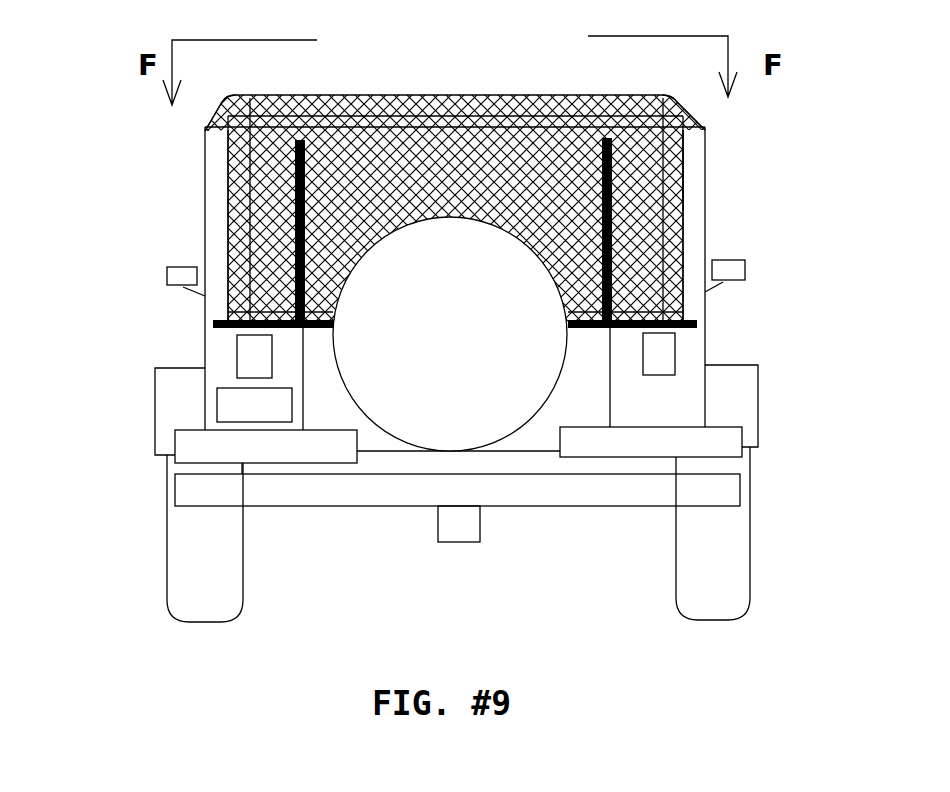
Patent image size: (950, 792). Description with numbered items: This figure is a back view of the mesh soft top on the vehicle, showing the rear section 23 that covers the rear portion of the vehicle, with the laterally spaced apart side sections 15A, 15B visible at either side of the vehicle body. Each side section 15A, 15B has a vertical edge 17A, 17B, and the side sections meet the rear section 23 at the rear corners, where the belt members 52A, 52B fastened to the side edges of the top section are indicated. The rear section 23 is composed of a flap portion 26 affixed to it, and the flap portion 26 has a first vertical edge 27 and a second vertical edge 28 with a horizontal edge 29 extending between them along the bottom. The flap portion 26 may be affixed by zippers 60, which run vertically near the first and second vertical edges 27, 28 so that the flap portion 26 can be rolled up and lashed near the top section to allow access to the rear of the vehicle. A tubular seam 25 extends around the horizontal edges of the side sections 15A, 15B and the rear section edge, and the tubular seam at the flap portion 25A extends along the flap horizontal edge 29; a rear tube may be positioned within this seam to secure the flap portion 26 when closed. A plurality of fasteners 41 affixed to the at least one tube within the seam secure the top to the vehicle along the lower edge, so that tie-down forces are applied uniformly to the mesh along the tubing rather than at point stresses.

The side section 15A is at (228, 291).
The side section 15B is at (705, 296).
The side section vertical edge 17A is at (235, 247).
The side section vertical edge 17B is at (685, 215).
The rear section 23 is at (453, 130).
The tubular seam 25 is at (685, 253).
The flap portion tubular seam 25A is at (335, 325).
The flap portion 26 is at (470, 183).
The first vertical edge 27 is at (232, 228).
The second vertical edge 28 is at (685, 205).
The horizontal edge 29 is at (588, 322).
The fasteners 41 is at (217, 323).
The belt member 52A is at (205, 133).
The belt member 52B is at (703, 127).
The zippers 60 is at (297, 217).